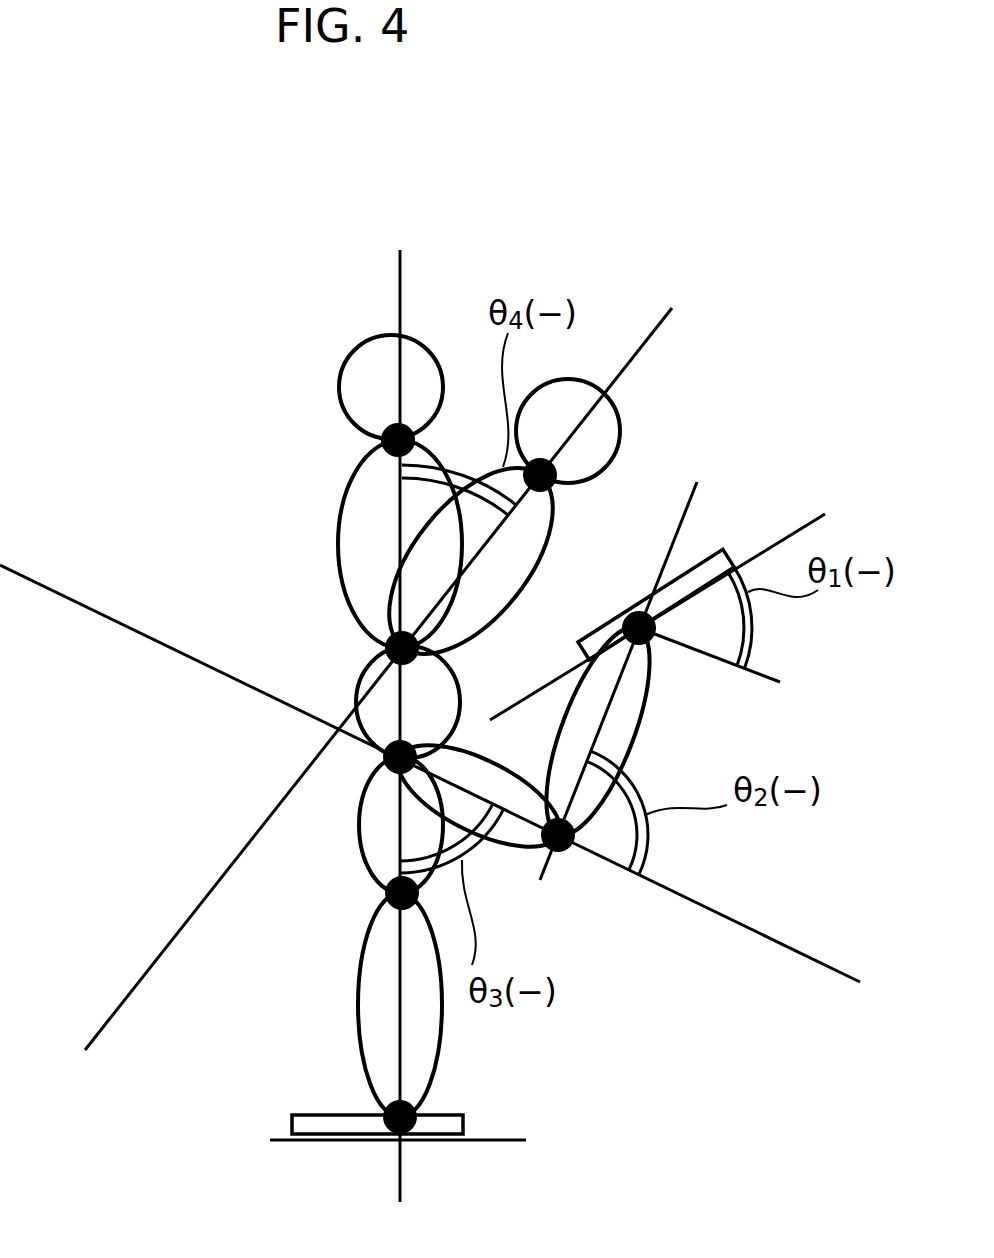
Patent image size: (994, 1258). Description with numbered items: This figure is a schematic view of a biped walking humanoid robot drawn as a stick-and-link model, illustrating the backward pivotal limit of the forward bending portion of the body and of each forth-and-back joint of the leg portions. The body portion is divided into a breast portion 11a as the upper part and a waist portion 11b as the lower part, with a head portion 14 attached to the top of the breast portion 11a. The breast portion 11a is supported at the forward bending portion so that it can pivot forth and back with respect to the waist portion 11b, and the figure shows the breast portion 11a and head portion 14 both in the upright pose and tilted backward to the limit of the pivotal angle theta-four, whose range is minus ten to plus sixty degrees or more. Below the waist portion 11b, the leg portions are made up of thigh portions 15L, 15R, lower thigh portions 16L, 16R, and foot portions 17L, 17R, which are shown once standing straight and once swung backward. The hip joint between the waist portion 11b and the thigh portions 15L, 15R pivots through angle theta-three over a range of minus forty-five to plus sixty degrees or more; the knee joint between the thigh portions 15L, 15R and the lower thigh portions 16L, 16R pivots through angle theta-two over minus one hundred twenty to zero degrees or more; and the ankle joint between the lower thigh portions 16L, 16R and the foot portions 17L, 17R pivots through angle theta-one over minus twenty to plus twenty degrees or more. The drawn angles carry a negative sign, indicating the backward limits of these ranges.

The head portion 14 is at (353, 347).
The breast portion 11a is at (338, 512).
The waist portion 11b is at (383, 670).
The thigh portion 15L is at (350, 842).
The thigh portion 15R is at (502, 857).
The lower thigh portion 16L is at (358, 1010).
The lower thigh portion 16R is at (655, 700).
The foot portion 17L is at (447, 1115).
The foot portion 17R is at (712, 553).